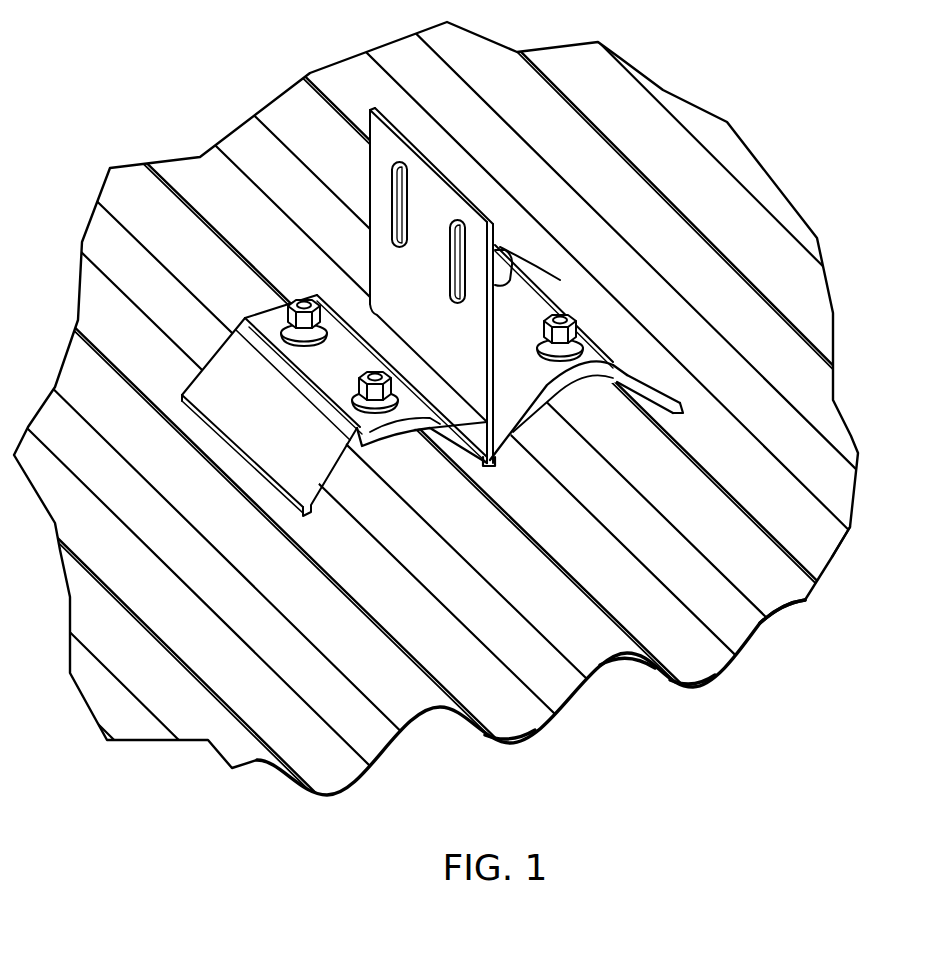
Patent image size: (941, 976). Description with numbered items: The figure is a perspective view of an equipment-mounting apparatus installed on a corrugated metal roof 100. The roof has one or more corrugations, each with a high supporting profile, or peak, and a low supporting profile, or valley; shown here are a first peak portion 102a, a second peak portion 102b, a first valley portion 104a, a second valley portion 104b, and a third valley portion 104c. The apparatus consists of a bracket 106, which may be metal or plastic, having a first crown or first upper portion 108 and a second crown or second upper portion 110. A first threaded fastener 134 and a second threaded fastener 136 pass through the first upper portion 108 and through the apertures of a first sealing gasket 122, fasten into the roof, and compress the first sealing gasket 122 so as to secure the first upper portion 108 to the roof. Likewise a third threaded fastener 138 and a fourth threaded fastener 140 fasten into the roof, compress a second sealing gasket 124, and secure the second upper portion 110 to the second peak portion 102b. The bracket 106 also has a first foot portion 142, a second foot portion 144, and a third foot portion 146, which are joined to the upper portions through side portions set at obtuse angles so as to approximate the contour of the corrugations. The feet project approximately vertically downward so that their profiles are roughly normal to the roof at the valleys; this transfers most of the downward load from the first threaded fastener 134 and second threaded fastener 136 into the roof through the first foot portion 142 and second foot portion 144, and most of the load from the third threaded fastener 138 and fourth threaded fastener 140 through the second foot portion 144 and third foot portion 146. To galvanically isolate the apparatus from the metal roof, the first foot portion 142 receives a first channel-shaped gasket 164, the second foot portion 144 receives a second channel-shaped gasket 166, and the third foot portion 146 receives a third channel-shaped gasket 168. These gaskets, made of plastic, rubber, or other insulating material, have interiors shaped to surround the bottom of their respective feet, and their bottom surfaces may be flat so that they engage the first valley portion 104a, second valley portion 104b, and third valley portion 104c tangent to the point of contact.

The corrugated metal roof 100 is at (94, 652).
The first peak portion 102a is at (620, 658).
The second peak portion 102b is at (794, 607).
The first valley portion 104a is at (538, 740).
The second valley portion 104b is at (712, 690).
The third valley portion 104c is at (835, 557).
The bracket 106 is at (410, 137).
The first upper portion 108 is at (270, 307).
The second upper portion 110 is at (537, 277).
The first sealing gasket 122 is at (392, 447).
The second sealing gasket 124 is at (582, 398).
The first threaded fastener 134 is at (307, 300).
The second threaded fastener 136 is at (377, 368).
The third threaded fastener 138 is at (567, 313).
The fourth threaded fastener 140 is at (500, 233).
The first foot portion 142 is at (303, 500).
The second foot portion 144 is at (488, 433).
The third foot portion 146 is at (680, 393).
The first channel-shaped gasket 164 is at (255, 478).
The second channel-shaped gasket 166 is at (490, 468).
The third channel-shaped gasket 168 is at (686, 405).